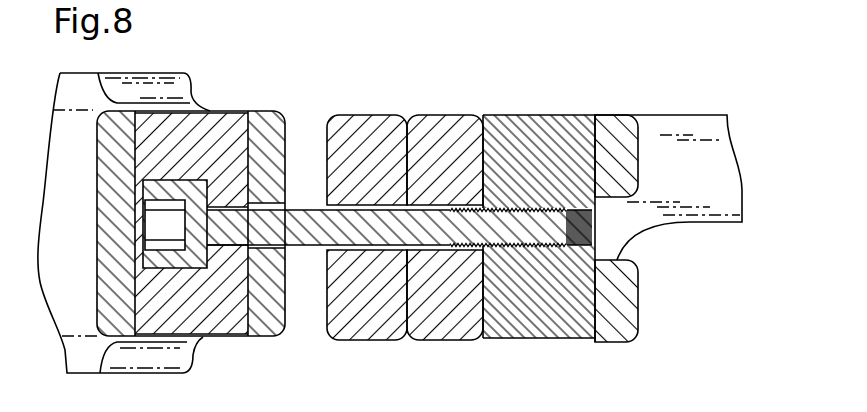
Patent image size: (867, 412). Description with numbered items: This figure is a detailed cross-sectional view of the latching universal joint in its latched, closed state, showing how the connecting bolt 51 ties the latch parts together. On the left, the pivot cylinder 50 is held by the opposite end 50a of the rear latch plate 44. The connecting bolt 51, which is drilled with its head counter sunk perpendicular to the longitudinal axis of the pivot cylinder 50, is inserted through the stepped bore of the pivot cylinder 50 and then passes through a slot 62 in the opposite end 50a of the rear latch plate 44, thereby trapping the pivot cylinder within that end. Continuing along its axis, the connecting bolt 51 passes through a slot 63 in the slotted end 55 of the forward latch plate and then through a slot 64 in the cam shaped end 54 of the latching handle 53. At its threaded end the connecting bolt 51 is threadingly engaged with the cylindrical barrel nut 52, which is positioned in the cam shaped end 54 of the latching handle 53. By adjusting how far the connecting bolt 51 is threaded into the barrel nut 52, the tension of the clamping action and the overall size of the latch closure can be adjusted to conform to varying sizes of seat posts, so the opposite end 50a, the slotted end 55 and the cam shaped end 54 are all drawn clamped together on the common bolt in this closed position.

The rear latch plate 44 is at (60, 255).
The pivot cylinder 50 is at (200, 338).
The opposite end of the rear latch plate 50a is at (187, 102).
The connecting bolt 51 is at (308, 245).
The cylindrical barrel nut 52 is at (543, 340).
The latching handle 53 is at (666, 207).
The cam shaped end of the latching handle 54 is at (448, 138).
The slotted end of the forward latch plate 55 is at (362, 135).
The slot in the opposite end of the rear latch plate 62 is at (287, 207).
The slot in the slotted end of the forward latch plate 63 is at (328, 250).
The slot in the cam shaped end of the latching handle 64 is at (440, 250).